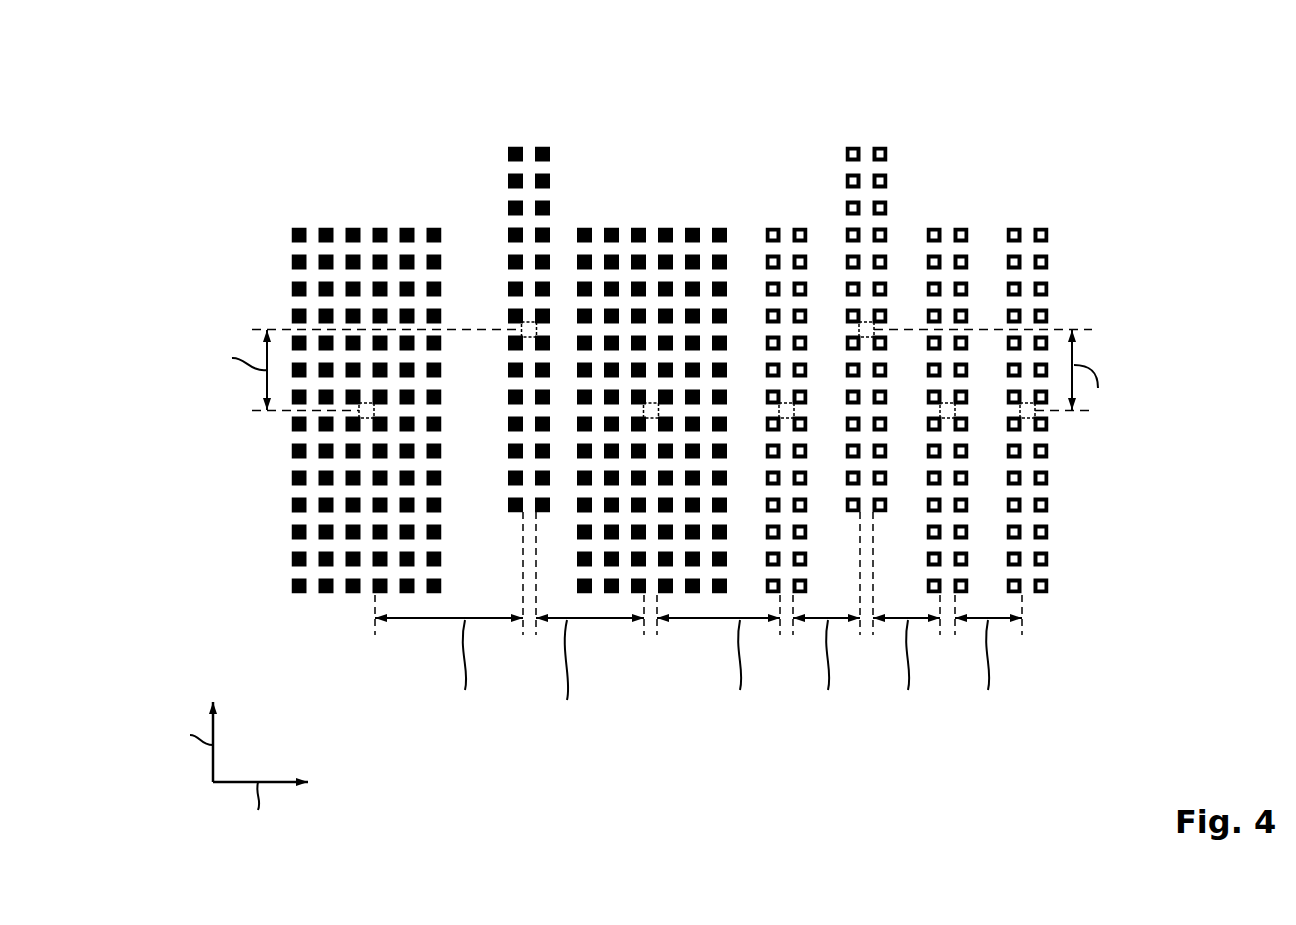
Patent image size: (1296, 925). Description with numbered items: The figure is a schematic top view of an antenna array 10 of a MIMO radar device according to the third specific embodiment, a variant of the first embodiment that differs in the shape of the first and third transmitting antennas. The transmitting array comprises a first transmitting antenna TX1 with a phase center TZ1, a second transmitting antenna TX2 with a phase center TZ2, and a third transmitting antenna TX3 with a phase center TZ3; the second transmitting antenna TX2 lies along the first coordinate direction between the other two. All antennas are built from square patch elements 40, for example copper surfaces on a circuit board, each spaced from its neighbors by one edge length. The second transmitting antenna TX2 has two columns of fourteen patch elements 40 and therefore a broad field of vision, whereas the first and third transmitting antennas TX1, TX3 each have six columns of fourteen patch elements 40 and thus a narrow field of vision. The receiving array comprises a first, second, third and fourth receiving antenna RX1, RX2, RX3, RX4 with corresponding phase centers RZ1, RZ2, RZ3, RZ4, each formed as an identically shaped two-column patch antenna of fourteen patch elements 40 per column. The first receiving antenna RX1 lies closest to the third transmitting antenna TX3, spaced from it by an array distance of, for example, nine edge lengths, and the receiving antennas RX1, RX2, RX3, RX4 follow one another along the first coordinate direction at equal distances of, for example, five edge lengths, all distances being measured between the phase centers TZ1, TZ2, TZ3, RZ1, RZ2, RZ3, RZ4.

The antenna array 10 is at (330, 118).
The patch elements 40 is at (880, 145).
The first transmitting antenna TX1 is at (288, 638).
The second transmitting antenna TX2 is at (500, 638).
The third transmitting antenna TX3 is at (733, 638).
The first receiving antenna RX1 is at (755, 638).
The second receiving antenna RX2 is at (895, 638).
The third receiving antenna RX3 is at (975, 638).
The fourth receiving antenna RX4 is at (1055, 638).
The phase center of the first transmitting antenna TZ1 is at (375, 410).
The phase center of the second transmitting antenna TZ2 is at (521, 329).
The phase center of the third transmitting antenna TZ3 is at (650, 403).
The phase center of the first receiving antenna RZ1 is at (779, 410).
The phase center of the second receiving antenna RZ2 is at (859, 330).
The phase center of the third receiving antenna RZ3 is at (955, 410).
The phase center of the fourth receiving antenna RZ4 is at (1035, 411).